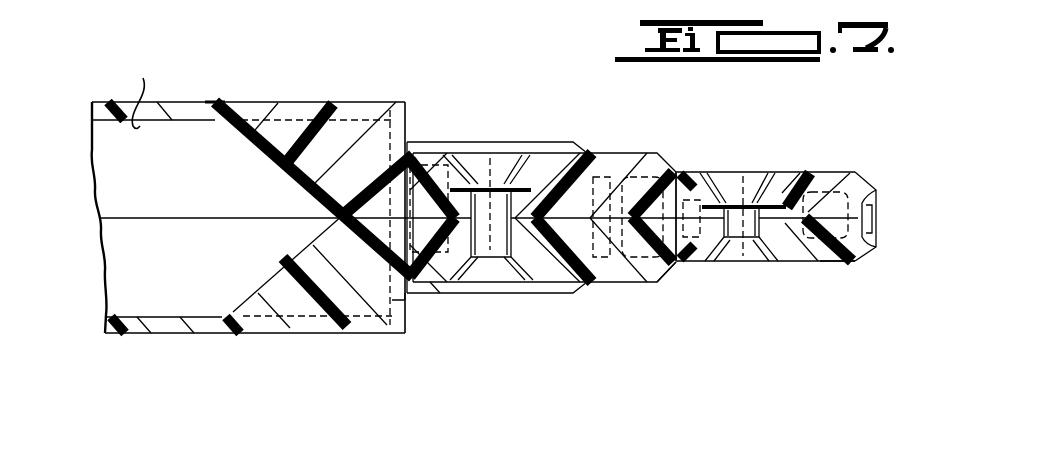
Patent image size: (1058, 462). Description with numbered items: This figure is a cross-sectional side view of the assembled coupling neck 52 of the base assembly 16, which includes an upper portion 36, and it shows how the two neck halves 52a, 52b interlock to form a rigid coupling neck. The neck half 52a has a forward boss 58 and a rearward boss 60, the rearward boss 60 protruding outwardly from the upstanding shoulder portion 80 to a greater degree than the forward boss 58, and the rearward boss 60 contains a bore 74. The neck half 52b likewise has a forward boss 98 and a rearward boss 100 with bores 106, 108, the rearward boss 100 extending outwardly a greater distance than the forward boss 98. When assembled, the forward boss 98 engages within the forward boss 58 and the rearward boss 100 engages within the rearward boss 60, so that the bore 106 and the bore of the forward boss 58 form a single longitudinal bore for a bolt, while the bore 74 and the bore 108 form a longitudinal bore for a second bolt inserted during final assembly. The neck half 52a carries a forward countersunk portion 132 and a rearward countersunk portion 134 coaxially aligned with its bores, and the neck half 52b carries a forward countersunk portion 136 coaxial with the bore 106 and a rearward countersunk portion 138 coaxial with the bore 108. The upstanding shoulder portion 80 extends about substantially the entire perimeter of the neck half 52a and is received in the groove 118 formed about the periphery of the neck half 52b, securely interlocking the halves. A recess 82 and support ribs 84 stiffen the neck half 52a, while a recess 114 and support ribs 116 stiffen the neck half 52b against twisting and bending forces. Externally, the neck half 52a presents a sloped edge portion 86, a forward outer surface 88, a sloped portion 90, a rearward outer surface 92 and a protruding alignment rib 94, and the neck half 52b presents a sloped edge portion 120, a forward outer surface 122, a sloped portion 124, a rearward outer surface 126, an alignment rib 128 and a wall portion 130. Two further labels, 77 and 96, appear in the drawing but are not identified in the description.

The base assembly 16 is at (153, 341).
The upper portion 36 is at (240, 117).
The coupling neck 52 is at (760, 325).
The neck half 52a is at (318, 88).
The neck half 52b is at (364, 342).
The forward boss 58 is at (663, 268).
The rearward boss 60 is at (435, 140).
The bore 74 is at (527, 176).
The countersink 77 is at (752, 203).
The upstanding shoulder portion 80 is at (878, 192).
The recess 82 is at (138, 88).
The support ribs 84 is at (272, 140).
The sloped edge portion 86 is at (860, 175).
The forward outer surface 88 is at (812, 172).
The sloped portion 90 is at (668, 155).
The rearward outer surface 92 is at (600, 153).
The protruding alignment rib 94 is at (475, 142).
The housing flange 96 is at (410, 120).
The forward boss 98 is at (773, 227).
The rearward boss 100 is at (527, 264).
The bore 106 is at (762, 227).
The bore 108 is at (500, 235).
The recess 114 is at (203, 318).
The support ribs 116 is at (302, 258).
The groove 118 is at (870, 232).
The sloped edge portion 120 is at (872, 250).
The forward outer surface 122 is at (835, 262).
The sloped portion 124 is at (683, 275).
The rearward outer surface 126 is at (630, 290).
The alignment rib 128 is at (432, 292).
The wall portion 130 is at (405, 300).
The forward countersunk portion 132 is at (712, 185).
The rearward countersunk portion 134 is at (520, 170).
The forward countersunk portion 136 is at (722, 250).
The rearward countersunk portion 138 is at (477, 260).